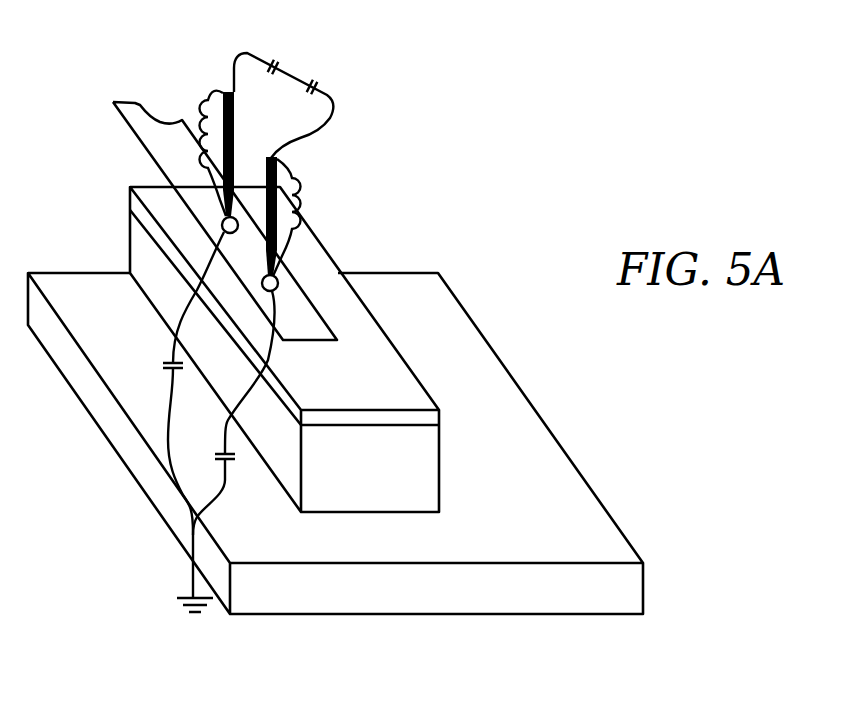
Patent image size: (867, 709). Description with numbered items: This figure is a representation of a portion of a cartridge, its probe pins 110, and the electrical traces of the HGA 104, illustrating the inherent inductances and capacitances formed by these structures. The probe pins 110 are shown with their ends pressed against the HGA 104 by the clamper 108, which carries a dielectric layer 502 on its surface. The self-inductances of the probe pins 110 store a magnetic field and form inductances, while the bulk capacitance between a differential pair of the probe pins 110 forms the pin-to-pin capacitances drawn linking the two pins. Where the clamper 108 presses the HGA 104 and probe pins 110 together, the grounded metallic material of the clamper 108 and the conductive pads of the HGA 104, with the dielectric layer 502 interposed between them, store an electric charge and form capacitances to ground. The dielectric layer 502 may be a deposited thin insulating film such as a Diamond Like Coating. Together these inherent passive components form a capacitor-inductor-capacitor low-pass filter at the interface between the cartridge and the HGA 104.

The HGA 104 is at (153, 158).
The clamper 108 is at (440, 458).
The probe pins 110 is at (234, 115).
The dielectric layer 502 is at (375, 415).